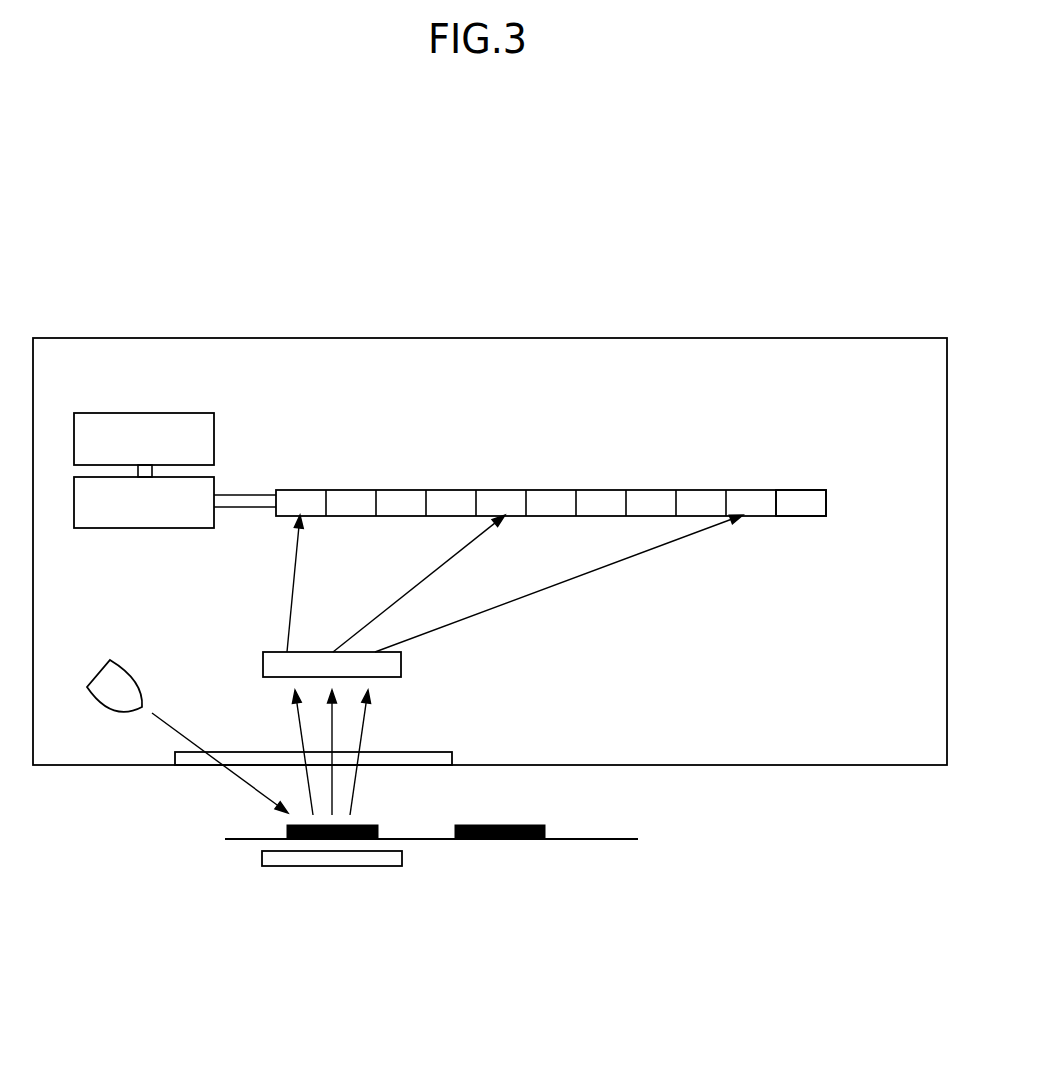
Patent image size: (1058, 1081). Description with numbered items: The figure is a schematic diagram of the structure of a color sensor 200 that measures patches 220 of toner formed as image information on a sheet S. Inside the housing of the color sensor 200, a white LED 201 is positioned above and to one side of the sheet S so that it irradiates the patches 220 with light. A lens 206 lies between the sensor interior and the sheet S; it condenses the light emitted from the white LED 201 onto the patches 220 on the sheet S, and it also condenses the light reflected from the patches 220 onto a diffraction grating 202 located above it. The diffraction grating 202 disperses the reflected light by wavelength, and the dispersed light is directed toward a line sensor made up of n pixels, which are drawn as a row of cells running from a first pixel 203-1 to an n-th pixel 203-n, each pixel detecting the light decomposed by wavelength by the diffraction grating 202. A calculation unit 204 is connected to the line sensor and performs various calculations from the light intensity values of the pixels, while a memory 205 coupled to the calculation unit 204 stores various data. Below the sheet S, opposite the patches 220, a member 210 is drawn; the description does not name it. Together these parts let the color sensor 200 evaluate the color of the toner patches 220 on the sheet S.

The color sensor 200 is at (660, 338).
The white LED 201 is at (137, 680).
The diffraction grating 202 is at (401, 665).
The first pixel of line sensor 203-1 is at (302, 490).
The n-th pixel of line sensor 203-n is at (812, 490).
The calculation unit 204 is at (112, 528).
The memory 205 is at (126, 413).
The lens 206 is at (453, 760).
The stage 210 is at (375, 866).
The patches 220 is at (287, 825).
The sheet S is at (600, 839).